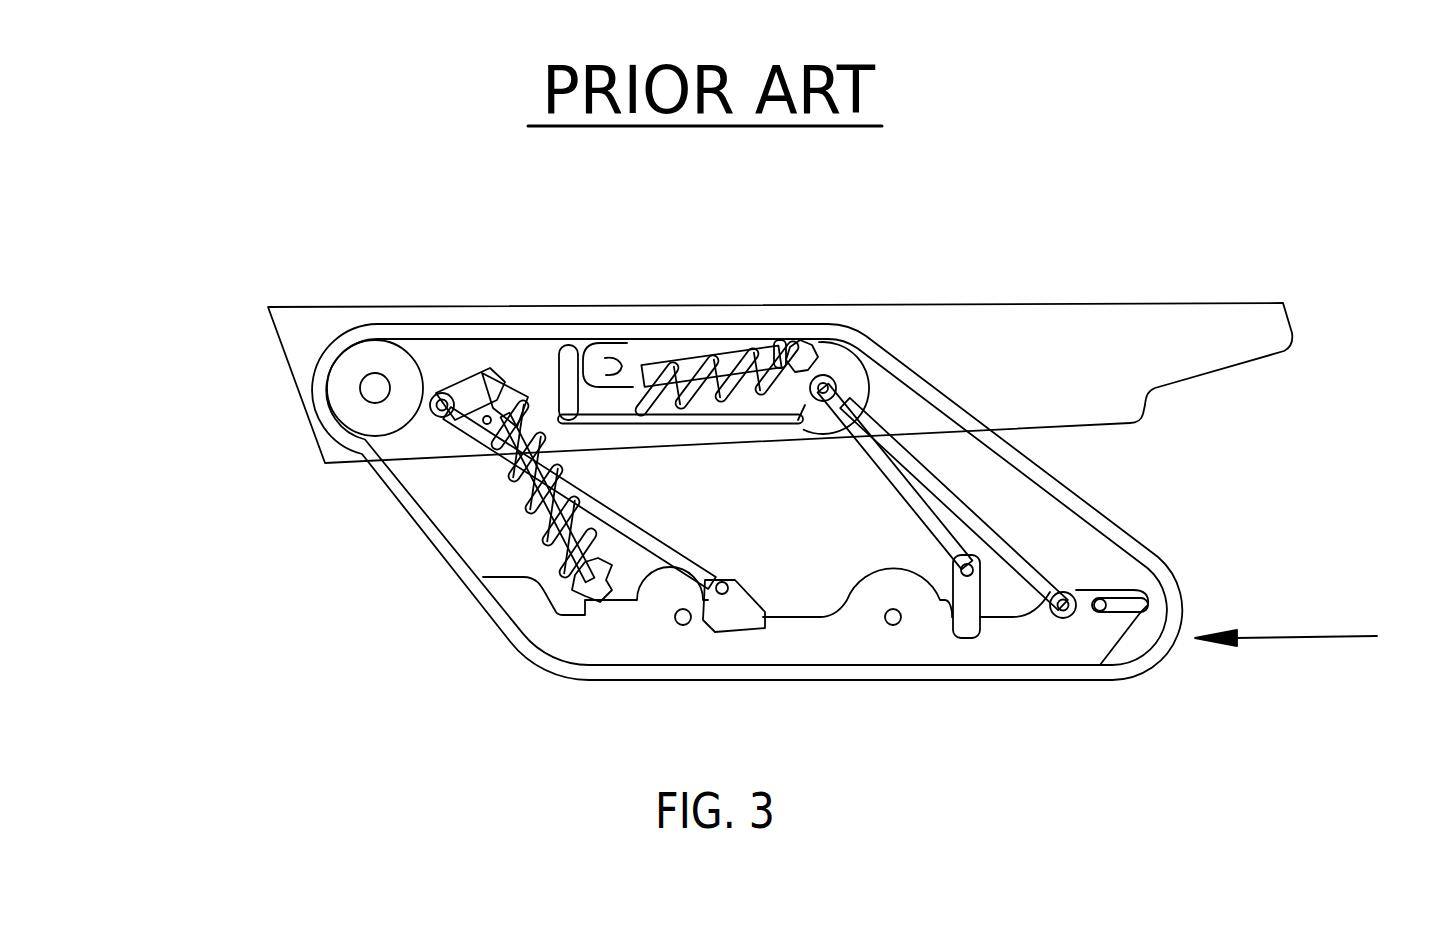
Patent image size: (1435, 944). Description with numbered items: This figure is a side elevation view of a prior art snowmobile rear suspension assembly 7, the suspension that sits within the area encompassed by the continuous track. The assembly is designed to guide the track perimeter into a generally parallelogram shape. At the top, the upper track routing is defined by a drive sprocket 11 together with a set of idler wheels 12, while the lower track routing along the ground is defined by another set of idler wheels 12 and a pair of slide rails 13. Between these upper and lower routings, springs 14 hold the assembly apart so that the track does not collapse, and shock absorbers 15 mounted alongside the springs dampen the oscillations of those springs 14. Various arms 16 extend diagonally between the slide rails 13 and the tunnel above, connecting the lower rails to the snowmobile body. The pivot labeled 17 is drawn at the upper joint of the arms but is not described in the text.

The rear suspension assembly 7 is at (1306, 635).
The drive sprocket 11 is at (348, 375).
The idler wheels 12 is at (843, 358).
The slide rails 13 is at (823, 633).
The springs 14 is at (727, 367).
The shock absorbers 15 is at (703, 360).
The arms 16 is at (621, 518).
The pivot pin 17 is at (827, 385).